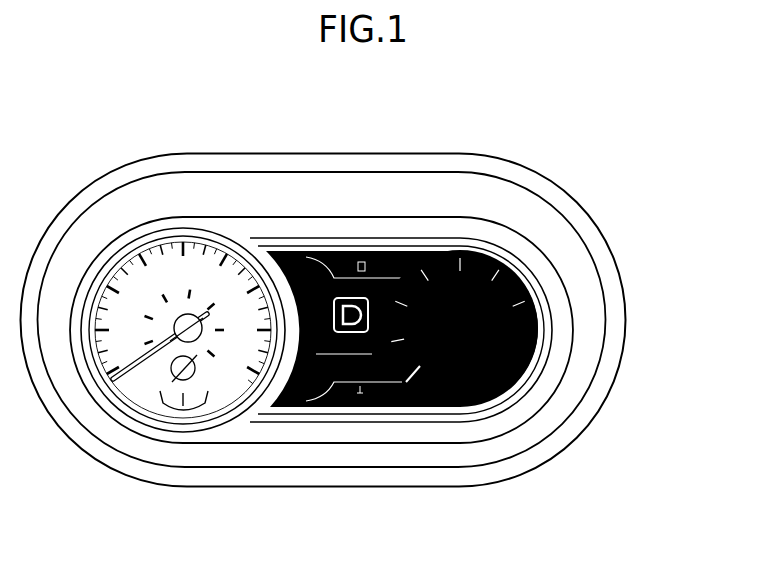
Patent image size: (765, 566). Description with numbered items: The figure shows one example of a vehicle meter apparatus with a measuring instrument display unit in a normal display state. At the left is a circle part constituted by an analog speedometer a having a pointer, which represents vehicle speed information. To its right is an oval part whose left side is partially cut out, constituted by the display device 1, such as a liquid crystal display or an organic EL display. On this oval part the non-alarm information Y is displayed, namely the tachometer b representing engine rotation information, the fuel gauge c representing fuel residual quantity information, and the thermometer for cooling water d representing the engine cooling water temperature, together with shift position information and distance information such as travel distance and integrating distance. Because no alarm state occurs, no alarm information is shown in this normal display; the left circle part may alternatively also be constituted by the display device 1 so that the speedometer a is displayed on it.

The display device 1 is at (440, 237).
The speedometer a is at (175, 258).
The tachometer b is at (513, 288).
The fuel gauge c is at (340, 265).
The thermometer for cooling water d is at (344, 400).
The non-alarm information Y is at (332, 315).